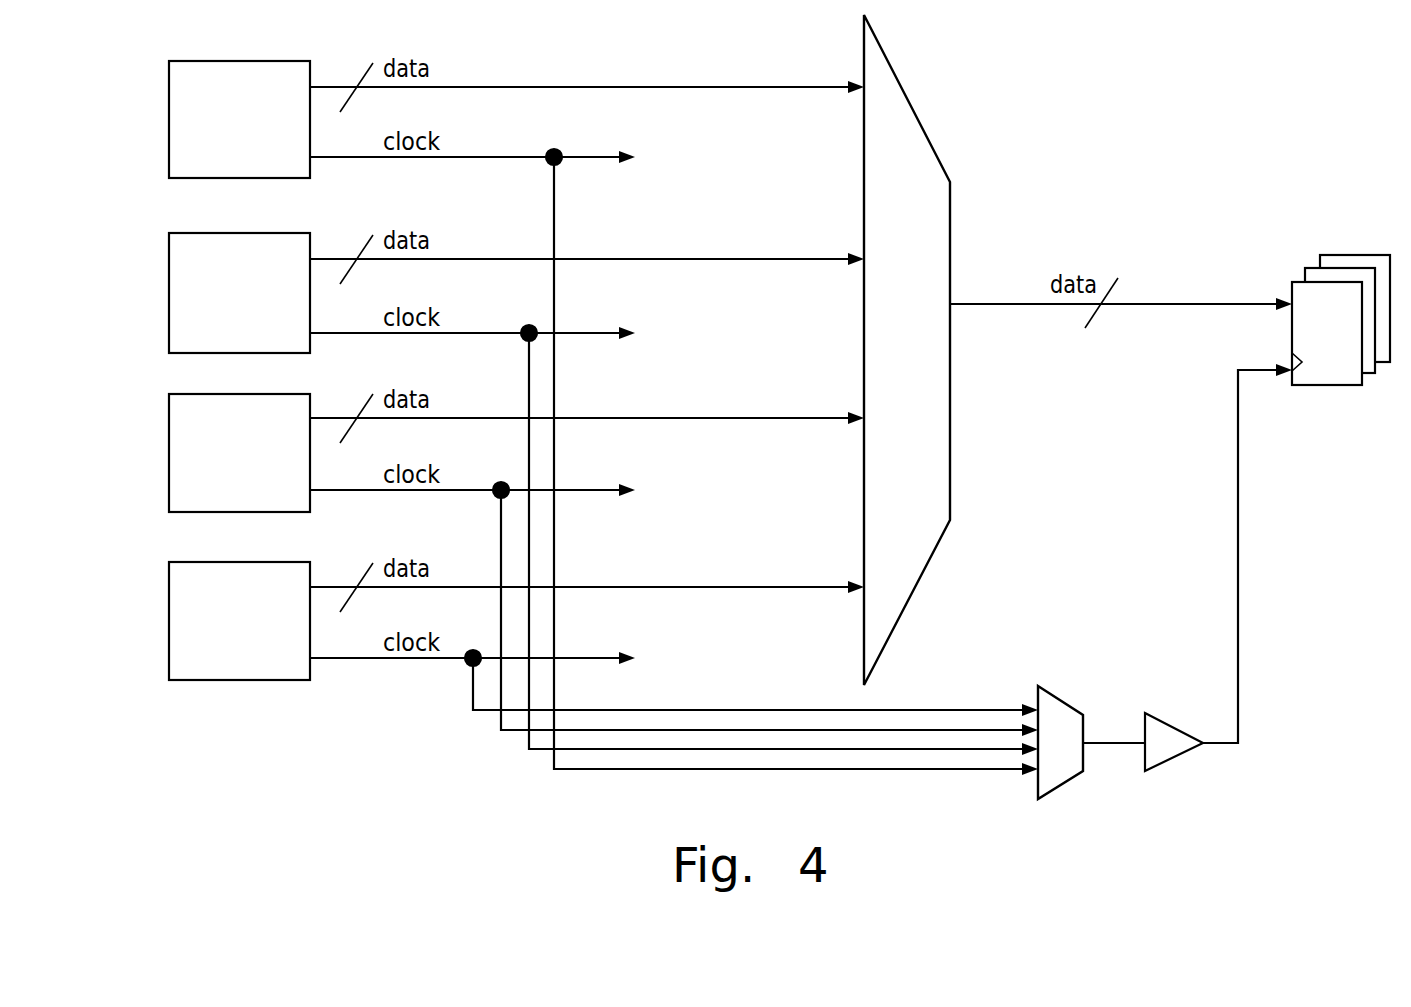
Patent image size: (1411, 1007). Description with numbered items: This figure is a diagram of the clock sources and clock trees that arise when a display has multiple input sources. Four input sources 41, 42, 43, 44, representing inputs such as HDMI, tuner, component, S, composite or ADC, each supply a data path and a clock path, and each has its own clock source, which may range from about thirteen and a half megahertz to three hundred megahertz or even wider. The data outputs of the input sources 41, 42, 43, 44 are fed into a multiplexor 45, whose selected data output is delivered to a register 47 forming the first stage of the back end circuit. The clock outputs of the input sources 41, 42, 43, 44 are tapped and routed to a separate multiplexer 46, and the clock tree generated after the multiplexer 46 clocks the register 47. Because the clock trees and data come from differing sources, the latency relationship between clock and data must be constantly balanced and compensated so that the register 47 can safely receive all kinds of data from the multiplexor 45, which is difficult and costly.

The input source 41 is at (169, 123).
The input source 42 is at (169, 295).
The input source 43 is at (169, 453).
The input source 44 is at (169, 622).
The multiplexor 45 is at (913, 107).
The multiplexer 46 is at (1061, 700).
The register 47 is at (1356, 255).